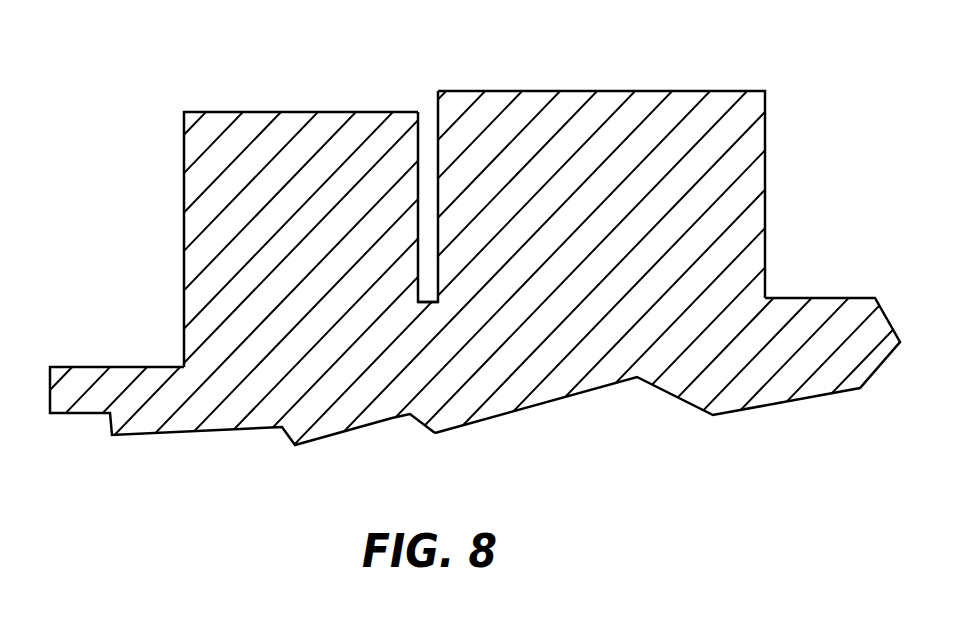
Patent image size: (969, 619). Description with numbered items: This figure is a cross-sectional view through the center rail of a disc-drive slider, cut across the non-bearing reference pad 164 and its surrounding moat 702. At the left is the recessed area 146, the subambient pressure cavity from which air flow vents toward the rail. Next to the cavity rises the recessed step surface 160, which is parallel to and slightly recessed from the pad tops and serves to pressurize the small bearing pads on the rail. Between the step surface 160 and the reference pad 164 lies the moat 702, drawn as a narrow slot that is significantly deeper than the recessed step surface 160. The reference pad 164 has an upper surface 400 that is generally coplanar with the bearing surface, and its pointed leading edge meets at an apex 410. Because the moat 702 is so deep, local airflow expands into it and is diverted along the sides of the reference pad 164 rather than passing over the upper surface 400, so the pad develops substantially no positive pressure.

The recessed area 146 is at (120, 367).
The recessed step surface 160 is at (247, 112).
The non-bearing reference pad 164 is at (582, 75).
The upper surface 400 is at (702, 90).
The apex 410 is at (432, 108).
The moat 702 is at (415, 263).